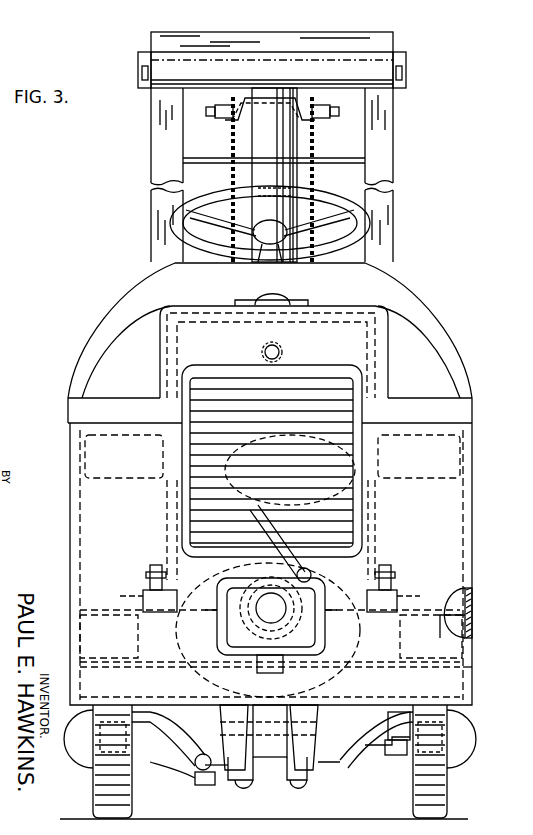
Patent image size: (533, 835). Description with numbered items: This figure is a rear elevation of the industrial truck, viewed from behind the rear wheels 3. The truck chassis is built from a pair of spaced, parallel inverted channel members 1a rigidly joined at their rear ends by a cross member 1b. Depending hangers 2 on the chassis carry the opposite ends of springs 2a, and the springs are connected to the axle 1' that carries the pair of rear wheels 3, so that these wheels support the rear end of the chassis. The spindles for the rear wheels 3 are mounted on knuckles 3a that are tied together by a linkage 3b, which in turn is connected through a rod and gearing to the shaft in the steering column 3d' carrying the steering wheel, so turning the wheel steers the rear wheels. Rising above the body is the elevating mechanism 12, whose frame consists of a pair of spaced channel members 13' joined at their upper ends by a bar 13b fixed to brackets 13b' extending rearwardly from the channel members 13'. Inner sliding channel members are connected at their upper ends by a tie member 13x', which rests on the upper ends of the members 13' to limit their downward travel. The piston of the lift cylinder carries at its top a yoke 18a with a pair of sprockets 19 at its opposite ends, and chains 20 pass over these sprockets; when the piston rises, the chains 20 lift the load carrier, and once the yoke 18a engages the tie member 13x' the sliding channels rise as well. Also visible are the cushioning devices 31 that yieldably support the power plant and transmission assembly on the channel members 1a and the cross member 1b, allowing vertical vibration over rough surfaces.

The axle 1' is at (365, 748).
The inverted channel members 1a is at (456, 600).
The cross member 1b is at (472, 672).
The hangers 2 is at (322, 722).
The springs 2a is at (262, 765).
The rear wheels 3 is at (130, 790).
The knuckles 3a is at (180, 741).
The linkage 3b is at (172, 774).
The steering column 3d' is at (301, 224).
The elevating mechanism 12 is at (277, 101).
The channel members 13' is at (151, 175).
The bar 13b is at (288, 175).
The brackets 13b' is at (422, 80).
The tie member 13x' is at (288, 56).
The yoke 18a is at (270, 95).
The sprockets 19 is at (222, 122).
The chains 20 is at (231, 182).
The cushioning devices 31 is at (397, 585).